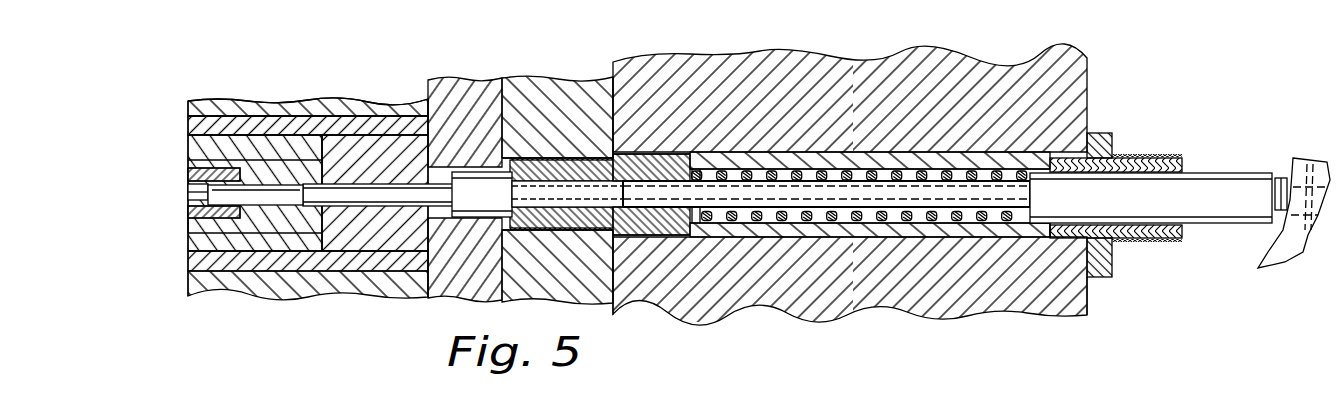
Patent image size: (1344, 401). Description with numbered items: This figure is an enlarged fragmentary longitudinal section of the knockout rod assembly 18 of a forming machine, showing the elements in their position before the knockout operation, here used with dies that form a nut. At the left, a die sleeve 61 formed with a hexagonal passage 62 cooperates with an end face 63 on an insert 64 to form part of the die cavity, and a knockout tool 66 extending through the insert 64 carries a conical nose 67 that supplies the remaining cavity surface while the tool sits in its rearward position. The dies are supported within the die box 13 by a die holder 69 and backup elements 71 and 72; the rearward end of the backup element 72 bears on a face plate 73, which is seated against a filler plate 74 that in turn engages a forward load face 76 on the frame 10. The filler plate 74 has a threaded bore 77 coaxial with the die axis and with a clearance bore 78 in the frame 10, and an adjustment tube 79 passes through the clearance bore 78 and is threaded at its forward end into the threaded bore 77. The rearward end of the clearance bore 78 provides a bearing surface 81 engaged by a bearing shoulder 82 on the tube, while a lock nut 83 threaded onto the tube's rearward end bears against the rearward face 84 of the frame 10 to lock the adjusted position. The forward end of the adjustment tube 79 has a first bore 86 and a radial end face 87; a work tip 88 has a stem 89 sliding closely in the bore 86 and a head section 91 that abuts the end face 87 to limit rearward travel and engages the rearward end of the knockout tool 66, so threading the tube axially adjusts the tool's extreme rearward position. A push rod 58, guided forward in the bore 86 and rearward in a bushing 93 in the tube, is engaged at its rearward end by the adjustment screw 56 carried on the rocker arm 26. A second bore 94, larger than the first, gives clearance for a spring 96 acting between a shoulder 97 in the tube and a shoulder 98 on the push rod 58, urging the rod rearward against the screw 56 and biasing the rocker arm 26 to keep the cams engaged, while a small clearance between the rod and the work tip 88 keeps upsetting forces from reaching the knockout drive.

The frame 10 is at (765, 56).
The die box 13 is at (298, 268).
The knockout rod assembly 18 is at (784, 148).
The rocker arm 26 is at (1310, 160).
The adjustment screw 56 is at (1280, 178).
The push rod 58 is at (1216, 182).
The die sleeve 61 is at (186, 218).
The hexagonal passage 62 is at (190, 197).
The end face 63 is at (200, 173).
The insert 64 is at (218, 216).
The knockout tool 66 is at (255, 190).
The conical nose 67 is at (188, 174).
The die holder 69 is at (297, 143).
The backup element 71 is at (283, 212).
The backup element 72 is at (372, 240).
The face plate 73 is at (447, 86).
The filler plate 74 is at (545, 82).
The forward load face 76 is at (604, 92).
The threaded bore 77 is at (558, 229).
The clearance bore 78 is at (650, 238).
The adjustment tube 79 is at (770, 238).
The bearing surface 81 is at (1025, 238).
The bearing shoulder 82 is at (1075, 240).
The lock nut 83 is at (1105, 277).
The rearward face 84 is at (1086, 318).
The first bore 86 is at (645, 179).
The radial end face 87 is at (516, 163).
The work tip 88 is at (478, 175).
The stem 89 is at (575, 195).
The head section 91 is at (492, 214).
The bushing 93 is at (1168, 244).
The second bore 94 is at (928, 224).
The spring 96 is at (850, 224).
The shoulder 97 is at (700, 224).
The shoulder 98 is at (1040, 197).